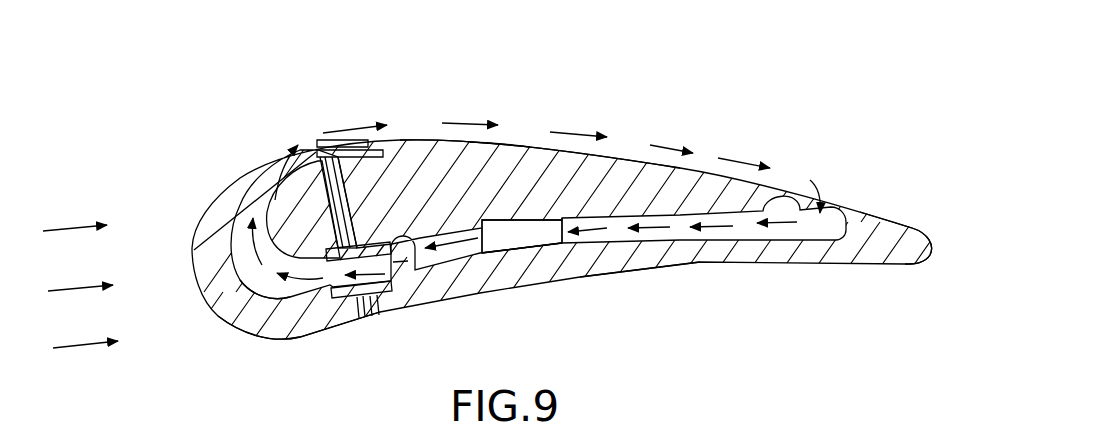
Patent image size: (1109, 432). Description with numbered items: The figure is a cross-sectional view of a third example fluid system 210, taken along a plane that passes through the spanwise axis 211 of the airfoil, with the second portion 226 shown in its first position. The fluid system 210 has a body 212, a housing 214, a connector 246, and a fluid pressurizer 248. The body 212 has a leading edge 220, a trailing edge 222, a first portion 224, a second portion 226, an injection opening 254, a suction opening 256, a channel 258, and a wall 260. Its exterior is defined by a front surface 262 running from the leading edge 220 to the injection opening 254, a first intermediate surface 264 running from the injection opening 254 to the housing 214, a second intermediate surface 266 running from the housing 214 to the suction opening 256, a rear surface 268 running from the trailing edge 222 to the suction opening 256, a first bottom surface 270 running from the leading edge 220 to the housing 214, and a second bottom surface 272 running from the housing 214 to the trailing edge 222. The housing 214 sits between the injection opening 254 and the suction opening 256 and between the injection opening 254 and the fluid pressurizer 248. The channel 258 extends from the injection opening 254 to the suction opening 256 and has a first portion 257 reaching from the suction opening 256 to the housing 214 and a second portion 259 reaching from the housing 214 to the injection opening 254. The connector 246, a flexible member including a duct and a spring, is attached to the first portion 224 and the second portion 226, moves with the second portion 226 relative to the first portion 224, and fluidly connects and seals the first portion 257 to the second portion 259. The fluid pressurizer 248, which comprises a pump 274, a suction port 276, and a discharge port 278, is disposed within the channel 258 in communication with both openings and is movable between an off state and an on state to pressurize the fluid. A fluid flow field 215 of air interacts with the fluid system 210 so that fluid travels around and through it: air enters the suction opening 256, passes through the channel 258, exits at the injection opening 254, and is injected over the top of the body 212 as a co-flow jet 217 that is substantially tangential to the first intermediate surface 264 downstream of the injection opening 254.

The fluid system 210 is at (743, 55).
The spanwise axis 211 is at (528, 195).
The body 212 is at (437, 104).
The housing 214 is at (332, 108).
The fluid flow field 215 is at (73, 196).
The jet 217 is at (470, 120).
The leading edge 220 is at (193, 215).
The trailing edge 222 is at (922, 280).
The first portion 224 is at (258, 130).
The second portion 226 is at (636, 127).
The connector 246 is at (426, 262).
The fluid pressurizer 248 is at (552, 242).
The injection opening 254 is at (280, 135).
The suction opening 256 is at (832, 200).
The first portion of the channel 257 is at (620, 238).
The channel 258 is at (254, 292).
The second portion of the channel 259 is at (258, 290).
The wall 260 is at (503, 148).
The front surface 262 is at (232, 188).
The first intermediate surface 264 is at (318, 145).
The second intermediate surface 266 is at (700, 170).
The rear surface 268 is at (880, 213).
The first bottom surface 270 is at (281, 338).
The second bottom surface 272 is at (665, 263).
The pump 274 is at (520, 245).
The suction port 276 is at (566, 244).
The discharge port 278 is at (483, 252).